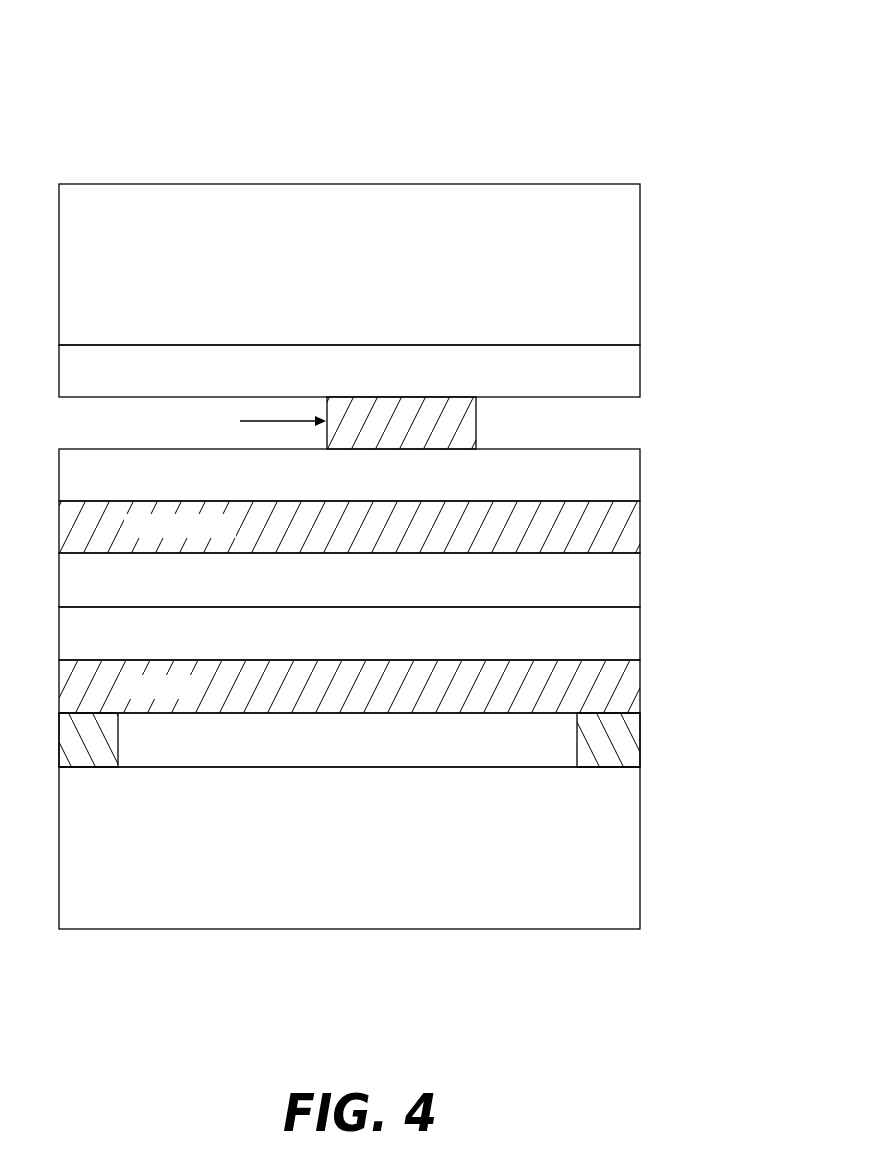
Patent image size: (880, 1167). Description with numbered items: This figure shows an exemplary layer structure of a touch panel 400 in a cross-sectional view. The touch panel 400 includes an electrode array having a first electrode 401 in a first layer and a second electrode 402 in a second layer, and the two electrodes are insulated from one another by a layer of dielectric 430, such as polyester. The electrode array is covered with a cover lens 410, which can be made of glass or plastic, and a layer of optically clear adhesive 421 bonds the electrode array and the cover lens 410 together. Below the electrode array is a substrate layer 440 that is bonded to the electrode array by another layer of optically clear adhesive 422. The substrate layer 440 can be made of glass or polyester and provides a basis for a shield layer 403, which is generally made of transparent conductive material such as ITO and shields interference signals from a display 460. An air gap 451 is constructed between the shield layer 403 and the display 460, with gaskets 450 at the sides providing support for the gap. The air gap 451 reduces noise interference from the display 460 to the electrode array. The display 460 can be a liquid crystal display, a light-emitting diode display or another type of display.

The touch panel 400 is at (519, 96).
The cover lens 410 is at (640, 230).
The optically clear adhesive 421 is at (640, 355).
The first electrode 401 is at (476, 411).
The dielectric layer 430 is at (640, 460).
The second electrode 402 is at (640, 514).
The optically clear adhesive 422 is at (640, 569).
The substrate layer 440 is at (640, 620).
The shield layer 403 is at (640, 675).
The air gap 451 is at (392, 778).
The gasket 450 is at (540, 758).
The display 460 is at (612, 898).